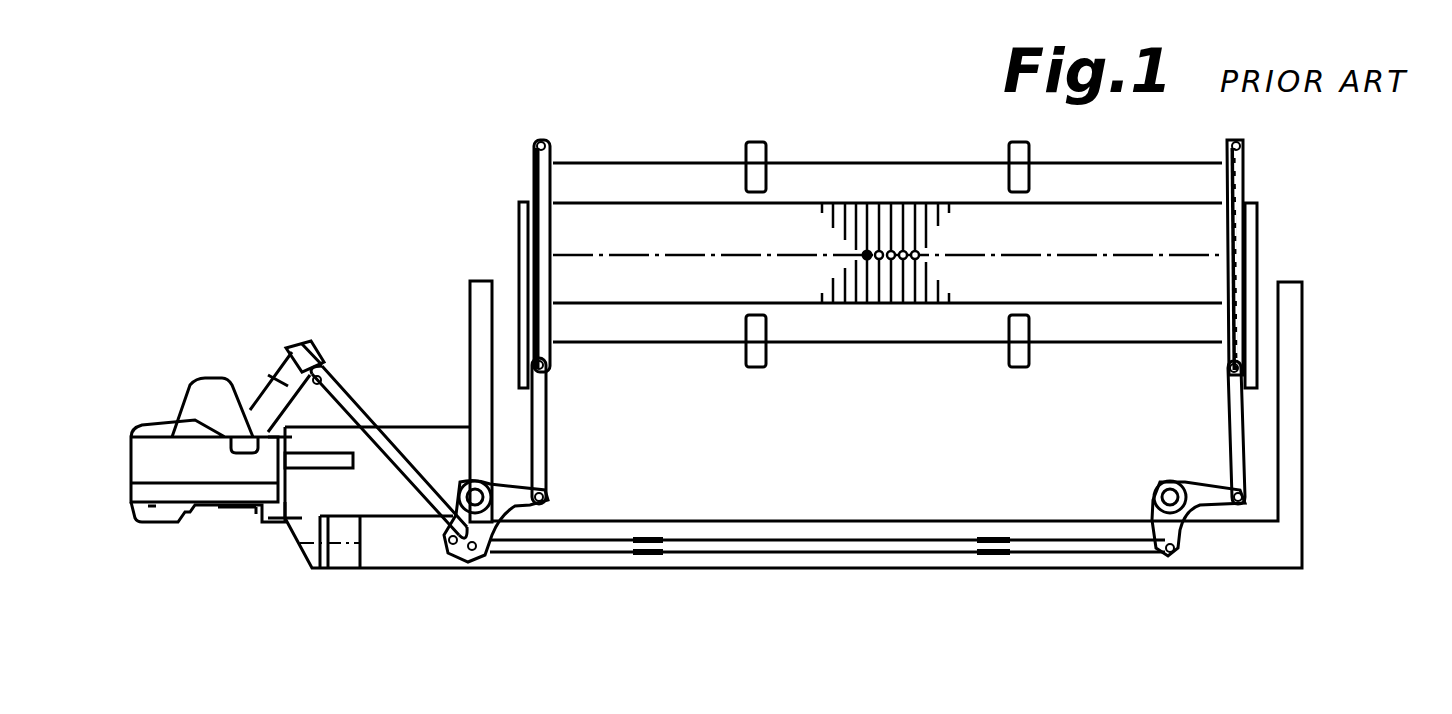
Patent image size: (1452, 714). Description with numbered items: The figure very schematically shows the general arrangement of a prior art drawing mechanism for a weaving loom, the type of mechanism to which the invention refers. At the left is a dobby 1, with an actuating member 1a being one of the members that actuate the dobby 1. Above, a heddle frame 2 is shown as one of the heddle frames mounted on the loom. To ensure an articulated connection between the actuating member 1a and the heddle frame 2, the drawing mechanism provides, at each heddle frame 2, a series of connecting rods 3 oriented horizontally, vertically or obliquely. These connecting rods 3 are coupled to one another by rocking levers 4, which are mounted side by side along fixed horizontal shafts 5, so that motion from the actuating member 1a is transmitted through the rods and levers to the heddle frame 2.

The dobby 1 is at (182, 462).
The actuating member 1a is at (281, 397).
The heddle frame 2 is at (840, 182).
The connecting rods 3 is at (336, 410).
The rocking levers 4 is at (511, 497).
The fixed horizontal shafts 5 is at (483, 486).